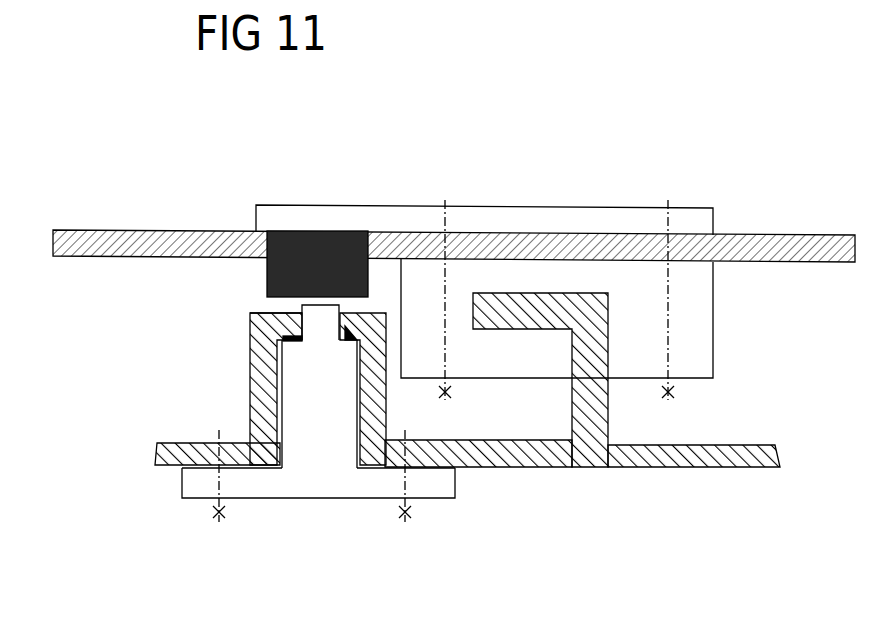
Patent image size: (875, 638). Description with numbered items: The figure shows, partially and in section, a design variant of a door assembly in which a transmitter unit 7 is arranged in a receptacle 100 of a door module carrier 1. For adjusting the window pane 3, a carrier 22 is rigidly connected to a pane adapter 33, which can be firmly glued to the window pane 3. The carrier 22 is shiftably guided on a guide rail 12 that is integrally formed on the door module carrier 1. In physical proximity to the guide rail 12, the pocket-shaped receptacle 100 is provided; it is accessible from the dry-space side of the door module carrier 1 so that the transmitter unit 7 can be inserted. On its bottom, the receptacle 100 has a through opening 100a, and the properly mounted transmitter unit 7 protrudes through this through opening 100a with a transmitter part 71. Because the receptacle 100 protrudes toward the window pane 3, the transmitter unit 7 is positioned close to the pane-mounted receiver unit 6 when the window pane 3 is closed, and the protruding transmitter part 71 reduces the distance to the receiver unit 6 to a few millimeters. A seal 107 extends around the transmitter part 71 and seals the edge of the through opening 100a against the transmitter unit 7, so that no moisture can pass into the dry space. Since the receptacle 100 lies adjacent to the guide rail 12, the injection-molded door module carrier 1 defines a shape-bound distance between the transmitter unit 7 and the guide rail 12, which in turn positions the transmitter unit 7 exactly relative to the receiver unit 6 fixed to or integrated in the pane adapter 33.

The door module carrier 1 is at (563, 438).
The window pane 3 is at (825, 237).
The receiver unit 6 is at (252, 231).
The transmitter unit 7 is at (313, 505).
The guide rail 12 is at (590, 427).
The carrier 22 is at (692, 338).
The pane adapter 33 is at (485, 207).
The transmitter part 71 is at (322, 327).
The receptacle 100 is at (250, 397).
The through opening 100a is at (252, 313).
The seal 107 is at (350, 342).